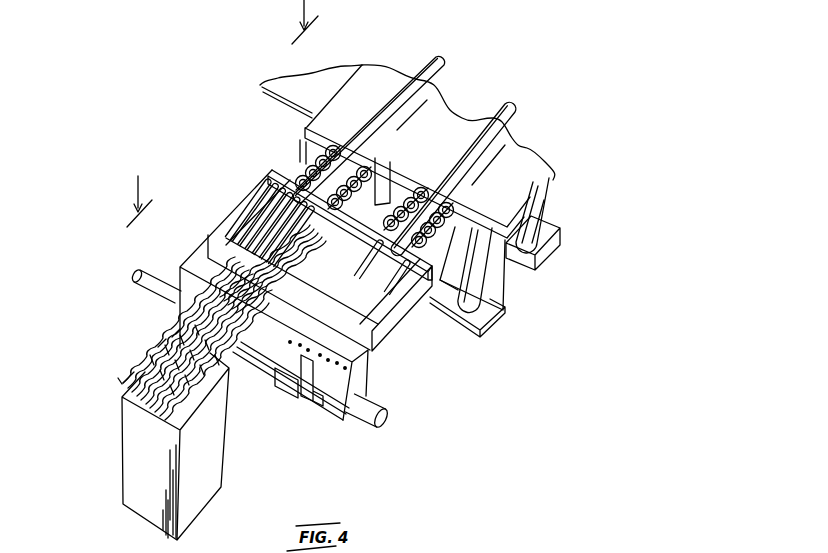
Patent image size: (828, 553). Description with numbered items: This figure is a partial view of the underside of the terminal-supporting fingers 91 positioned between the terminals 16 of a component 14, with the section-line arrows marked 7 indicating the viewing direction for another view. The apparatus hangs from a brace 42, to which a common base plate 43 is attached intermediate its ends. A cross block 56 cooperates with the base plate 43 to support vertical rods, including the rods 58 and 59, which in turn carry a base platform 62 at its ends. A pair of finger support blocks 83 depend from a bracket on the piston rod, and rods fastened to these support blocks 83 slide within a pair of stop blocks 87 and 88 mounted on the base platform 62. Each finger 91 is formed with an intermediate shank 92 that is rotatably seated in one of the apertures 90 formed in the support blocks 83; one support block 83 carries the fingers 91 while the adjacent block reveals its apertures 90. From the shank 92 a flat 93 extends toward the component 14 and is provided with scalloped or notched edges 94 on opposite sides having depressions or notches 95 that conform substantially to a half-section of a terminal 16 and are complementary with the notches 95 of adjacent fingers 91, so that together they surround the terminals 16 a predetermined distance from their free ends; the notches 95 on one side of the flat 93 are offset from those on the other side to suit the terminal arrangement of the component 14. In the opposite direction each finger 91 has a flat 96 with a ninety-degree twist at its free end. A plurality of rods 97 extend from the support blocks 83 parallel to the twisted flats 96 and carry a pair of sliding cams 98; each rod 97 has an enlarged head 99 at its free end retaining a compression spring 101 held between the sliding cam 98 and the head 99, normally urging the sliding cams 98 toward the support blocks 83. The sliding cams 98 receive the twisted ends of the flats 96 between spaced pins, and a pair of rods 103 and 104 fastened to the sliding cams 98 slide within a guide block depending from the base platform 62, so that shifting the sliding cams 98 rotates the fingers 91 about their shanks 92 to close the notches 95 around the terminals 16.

The section line arrows 7 is at (224, 113).
The component 14 is at (222, 459).
The terminal 16 is at (158, 352).
The brace 42 is at (318, 76).
The base plate 43 is at (482, 331).
The cross block 56 is at (549, 247).
The vertical rod 58 is at (488, 290).
The vertical rod 59 is at (546, 216).
The base platform 62 is at (540, 188).
The finger support block 83 is at (186, 263).
The stop block 87 is at (387, 183).
The stop block 88 is at (458, 250).
The aperture 90 is at (312, 352).
The terminal-supporting finger 91 is at (105, 381).
The shank 92 is at (240, 293).
The flat 93 is at (148, 372).
The notched edge 94 is at (160, 343).
The notch 95 is at (173, 333).
The twisted flat 96 is at (268, 173).
The rod 97 is at (310, 169).
The sliding cam 98 is at (247, 199).
The enlarged head 99 is at (327, 145).
The compression spring 101 is at (302, 162).
The rod 103 is at (508, 137).
The rod 104 is at (428, 94).